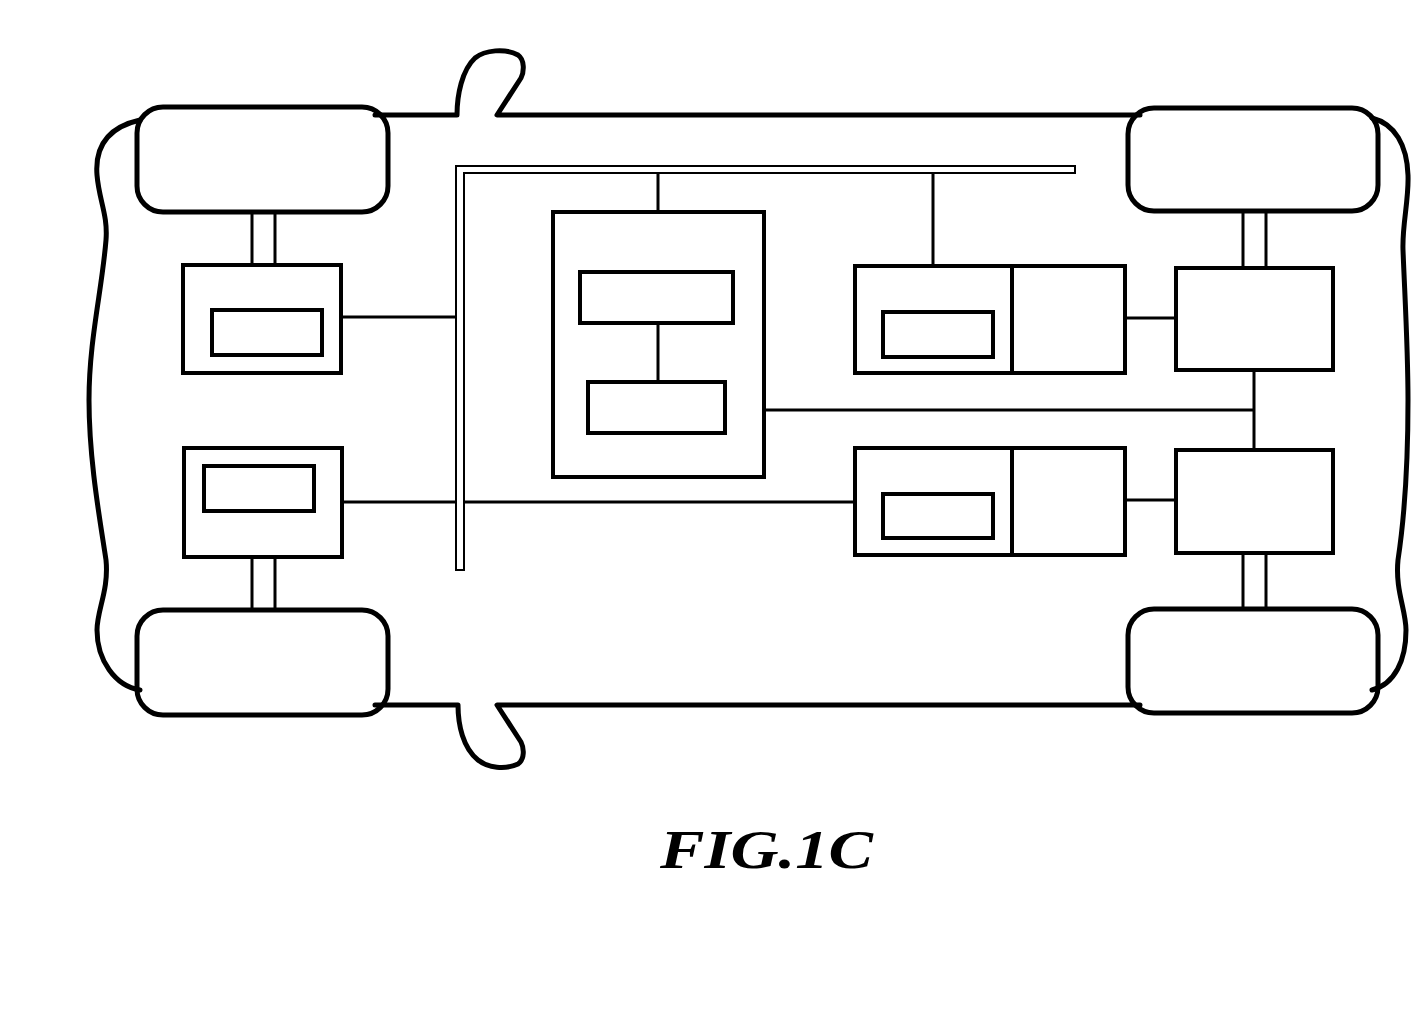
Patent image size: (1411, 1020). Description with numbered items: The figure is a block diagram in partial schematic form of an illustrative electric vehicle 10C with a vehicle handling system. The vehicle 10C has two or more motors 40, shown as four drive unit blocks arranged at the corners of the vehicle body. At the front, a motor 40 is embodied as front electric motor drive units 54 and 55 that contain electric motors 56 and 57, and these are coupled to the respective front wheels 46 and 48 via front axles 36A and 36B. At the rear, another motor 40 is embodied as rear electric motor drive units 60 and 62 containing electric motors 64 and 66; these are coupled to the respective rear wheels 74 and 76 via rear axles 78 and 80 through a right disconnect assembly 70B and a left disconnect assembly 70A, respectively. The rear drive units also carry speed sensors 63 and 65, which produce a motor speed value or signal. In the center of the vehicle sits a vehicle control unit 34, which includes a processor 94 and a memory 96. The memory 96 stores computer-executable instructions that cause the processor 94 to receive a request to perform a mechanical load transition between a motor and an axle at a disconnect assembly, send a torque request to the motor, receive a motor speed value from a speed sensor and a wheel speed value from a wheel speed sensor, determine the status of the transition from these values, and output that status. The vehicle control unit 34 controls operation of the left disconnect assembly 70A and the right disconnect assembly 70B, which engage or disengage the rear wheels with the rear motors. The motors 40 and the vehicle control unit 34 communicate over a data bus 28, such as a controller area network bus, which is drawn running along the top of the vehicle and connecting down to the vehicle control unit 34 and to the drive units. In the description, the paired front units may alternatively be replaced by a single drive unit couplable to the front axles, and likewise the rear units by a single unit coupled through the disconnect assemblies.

The vehicle 10C is at (1143, 42).
The data bus 28 is at (1005, 166).
The vehicle control unit 34 is at (626, 342).
The front axle 36A is at (253, 236).
The front axle 36B is at (253, 590).
The motor 40 is at (568, 412).
The front wheel 46 is at (295, 120).
The front wheel 48 is at (296, 702).
The front electric motor drive unit 54 is at (246, 301).
The front electric motor drive unit 55 is at (241, 521).
The electric motor 56 is at (213, 337).
The electric motor 57 is at (204, 485).
The rear electric motor drive unit 60 is at (903, 319).
The rear electric motor drive unit 62 is at (903, 501).
The speed sensor 63 is at (1075, 266).
The electric motor 64 is at (883, 338).
The speed sensor 65 is at (1075, 555).
The electric motor 66 is at (883, 520).
The left disconnect assembly 70A is at (1333, 469).
The right disconnect assembly 70B is at (1333, 357).
The rear wheel 74 is at (1287, 121).
The rear wheel 76 is at (1287, 700).
The rear axle 78 is at (1266, 226).
The rear axle 80 is at (1266, 595).
The processor 94 is at (684, 272).
The memory 96 is at (680, 382).